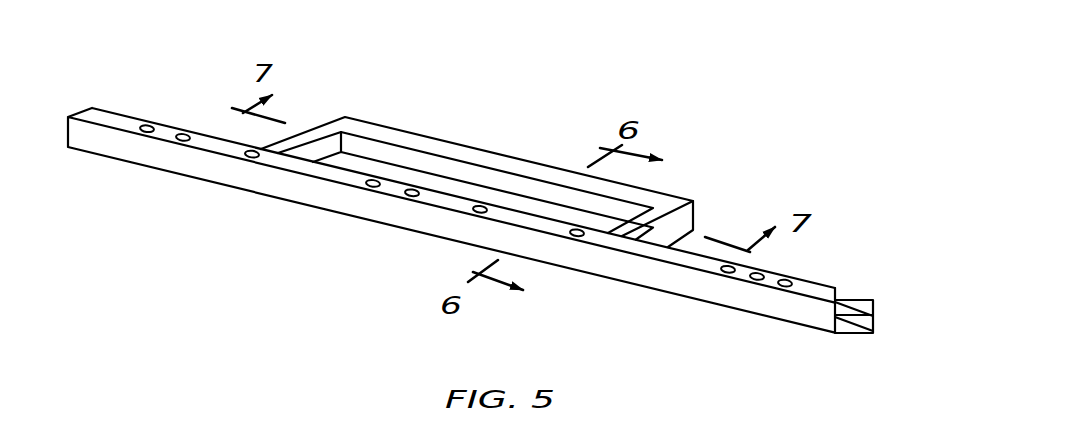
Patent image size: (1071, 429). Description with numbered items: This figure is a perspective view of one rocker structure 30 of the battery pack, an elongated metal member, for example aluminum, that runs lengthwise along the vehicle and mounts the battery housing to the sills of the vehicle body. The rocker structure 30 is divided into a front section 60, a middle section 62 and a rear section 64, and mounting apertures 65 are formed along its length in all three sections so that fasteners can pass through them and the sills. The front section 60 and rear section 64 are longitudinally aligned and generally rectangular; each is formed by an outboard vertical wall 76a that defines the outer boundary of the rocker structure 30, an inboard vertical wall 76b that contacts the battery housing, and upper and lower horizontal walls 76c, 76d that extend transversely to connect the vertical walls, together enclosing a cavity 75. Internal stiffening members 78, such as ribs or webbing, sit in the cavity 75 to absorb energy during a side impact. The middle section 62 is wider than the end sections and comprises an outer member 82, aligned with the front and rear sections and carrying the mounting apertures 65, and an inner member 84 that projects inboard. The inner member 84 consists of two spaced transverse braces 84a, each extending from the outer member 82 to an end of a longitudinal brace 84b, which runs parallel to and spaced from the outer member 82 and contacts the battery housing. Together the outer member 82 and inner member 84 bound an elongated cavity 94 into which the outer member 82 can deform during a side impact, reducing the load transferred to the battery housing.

The rocker structure 30 is at (120, 177).
The front section 60 is at (198, 165).
The middle section 62 is at (323, 193).
The rear section 64 is at (665, 280).
The mounting apertures 65 is at (779, 289).
The cavity 75 is at (862, 298).
The outboard vertical wall 76a is at (770, 300).
The inboard vertical wall 76b is at (873, 318).
The upper horizontal wall 76c is at (842, 300).
The lower horizontal wall 76d is at (850, 334).
The internal stiffening members 78 is at (875, 318).
The outer member 82 is at (400, 212).
The inner member 84 is at (530, 158).
The transverse braces 84a is at (315, 137).
The longitudinal brace 84b is at (450, 154).
The elongated cavity 94 is at (600, 212).